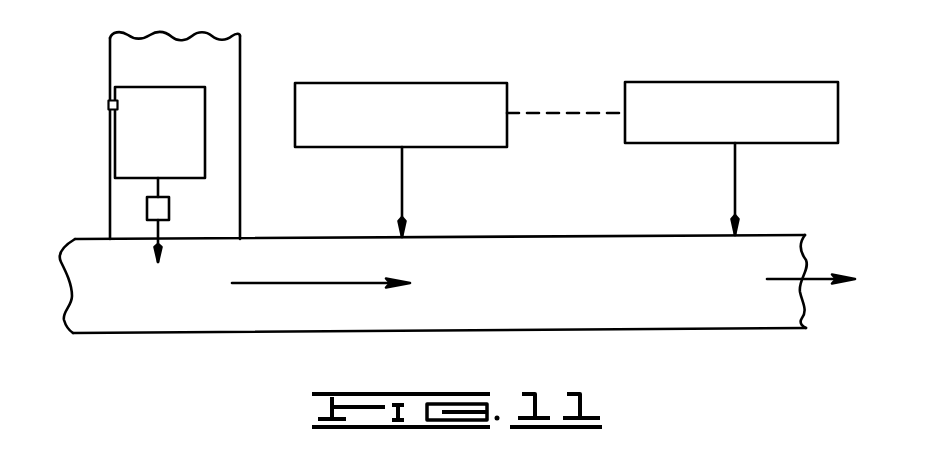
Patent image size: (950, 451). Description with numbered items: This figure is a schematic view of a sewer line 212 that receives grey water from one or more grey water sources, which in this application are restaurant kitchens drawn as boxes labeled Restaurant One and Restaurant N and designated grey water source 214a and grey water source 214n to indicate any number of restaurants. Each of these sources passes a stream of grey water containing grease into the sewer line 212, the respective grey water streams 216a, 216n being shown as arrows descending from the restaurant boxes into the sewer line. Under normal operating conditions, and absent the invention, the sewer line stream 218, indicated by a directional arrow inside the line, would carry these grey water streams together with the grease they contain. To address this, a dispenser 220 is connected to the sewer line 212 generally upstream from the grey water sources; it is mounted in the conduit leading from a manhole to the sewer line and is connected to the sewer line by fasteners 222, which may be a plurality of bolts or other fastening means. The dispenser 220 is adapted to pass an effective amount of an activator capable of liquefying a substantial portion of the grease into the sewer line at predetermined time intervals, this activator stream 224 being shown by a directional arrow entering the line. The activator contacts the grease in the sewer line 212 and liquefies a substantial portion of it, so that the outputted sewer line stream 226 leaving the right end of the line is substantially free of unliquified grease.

The sewer line 212 is at (602, 333).
The grey water source (Restaurant 1) 214a is at (405, 83).
The grey water source (Restaurant N) 214n is at (685, 82).
The grey water stream 216a is at (403, 187).
The grey water stream 216n is at (737, 183).
The sewer line stream 218 is at (328, 282).
The dispenser 220 is at (205, 115).
The fasteners 222 is at (109, 100).
The activator stream 224 is at (160, 229).
The outputted sewer line stream 226 is at (778, 278).